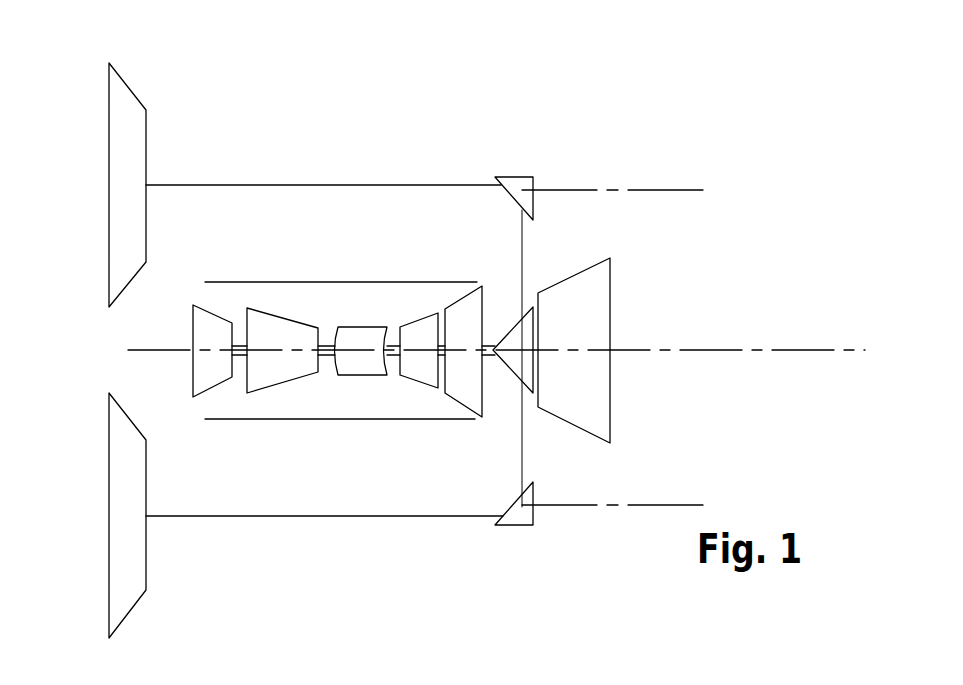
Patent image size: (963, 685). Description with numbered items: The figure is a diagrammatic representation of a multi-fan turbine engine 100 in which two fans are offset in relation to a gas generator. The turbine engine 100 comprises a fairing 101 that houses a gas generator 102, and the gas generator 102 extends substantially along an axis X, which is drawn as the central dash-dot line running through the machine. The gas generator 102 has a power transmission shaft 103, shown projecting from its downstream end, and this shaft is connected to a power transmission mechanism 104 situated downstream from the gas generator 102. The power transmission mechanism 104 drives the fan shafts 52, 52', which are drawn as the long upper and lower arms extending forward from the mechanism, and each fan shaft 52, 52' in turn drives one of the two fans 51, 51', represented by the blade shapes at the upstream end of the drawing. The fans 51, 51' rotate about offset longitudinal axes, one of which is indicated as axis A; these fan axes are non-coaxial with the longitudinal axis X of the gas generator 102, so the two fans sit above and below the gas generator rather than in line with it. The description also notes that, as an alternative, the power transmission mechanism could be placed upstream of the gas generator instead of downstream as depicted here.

The multi-fan turbine engine 100 is at (742, 143).
The fairing 101 is at (402, 272).
The gas generator 102 is at (150, 317).
The power transmission shaft 103 is at (492, 354).
The power transmission mechanism 104 is at (630, 280).
The fan 51 is at (136, 164).
The fan 51' is at (197, 515).
The fan shaft 52 is at (323, 125).
The fan shaft 52' is at (324, 572).
The axis X is at (772, 350).
The longitudinal axis A is at (645, 188).